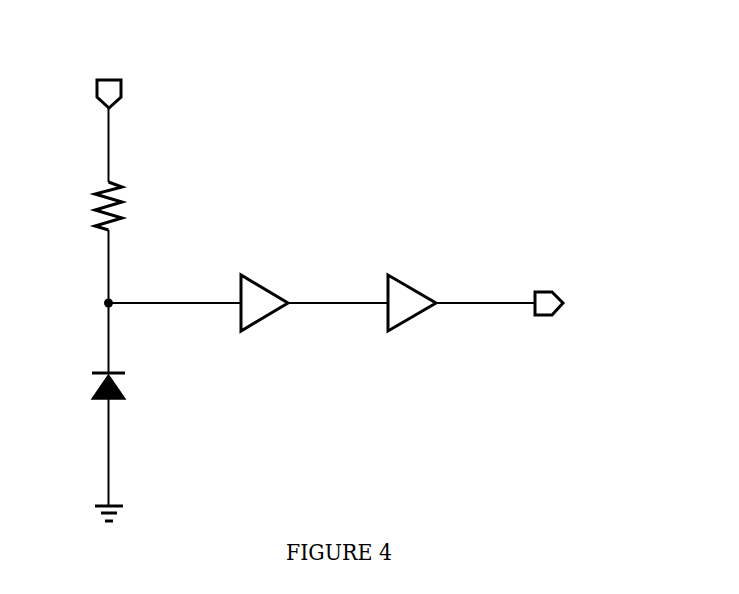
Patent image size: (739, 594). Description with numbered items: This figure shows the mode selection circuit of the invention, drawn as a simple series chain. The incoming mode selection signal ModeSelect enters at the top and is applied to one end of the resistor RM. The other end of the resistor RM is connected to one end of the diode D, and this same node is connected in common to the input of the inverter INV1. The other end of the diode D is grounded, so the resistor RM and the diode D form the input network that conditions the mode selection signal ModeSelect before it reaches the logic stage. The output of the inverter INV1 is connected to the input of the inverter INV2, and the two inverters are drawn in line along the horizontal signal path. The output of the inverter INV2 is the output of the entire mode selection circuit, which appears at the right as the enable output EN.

The mode selection signal ModeSelect is at (124, 78).
The resistor RM is at (126, 206).
The diode D is at (123, 386).
The inverter INV1 is at (266, 320).
The inverter INV2 is at (413, 320).
The output of the mode selection circuit EN is at (576, 303).